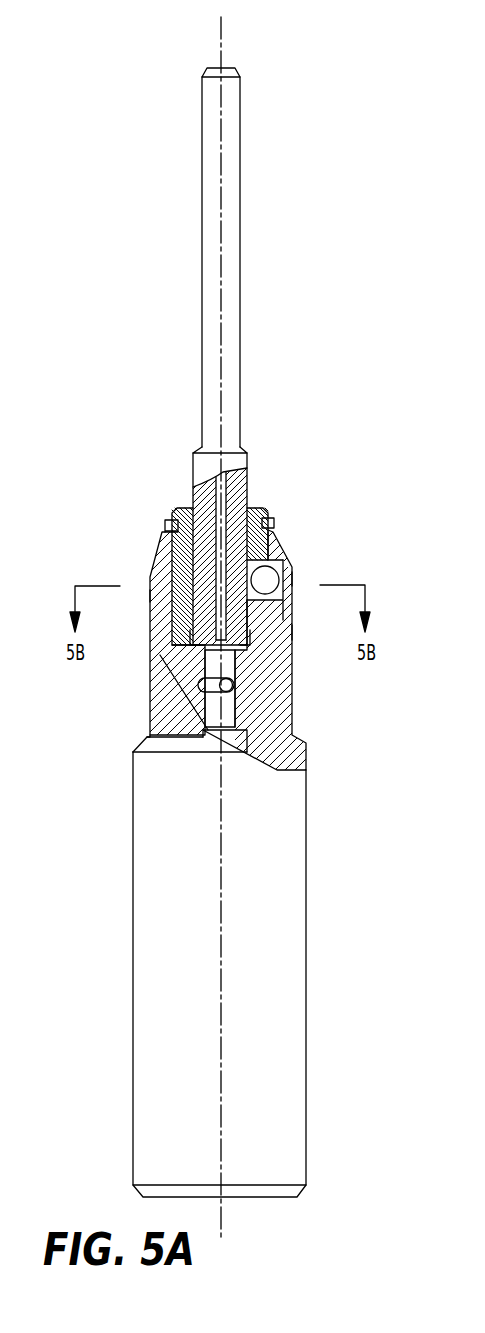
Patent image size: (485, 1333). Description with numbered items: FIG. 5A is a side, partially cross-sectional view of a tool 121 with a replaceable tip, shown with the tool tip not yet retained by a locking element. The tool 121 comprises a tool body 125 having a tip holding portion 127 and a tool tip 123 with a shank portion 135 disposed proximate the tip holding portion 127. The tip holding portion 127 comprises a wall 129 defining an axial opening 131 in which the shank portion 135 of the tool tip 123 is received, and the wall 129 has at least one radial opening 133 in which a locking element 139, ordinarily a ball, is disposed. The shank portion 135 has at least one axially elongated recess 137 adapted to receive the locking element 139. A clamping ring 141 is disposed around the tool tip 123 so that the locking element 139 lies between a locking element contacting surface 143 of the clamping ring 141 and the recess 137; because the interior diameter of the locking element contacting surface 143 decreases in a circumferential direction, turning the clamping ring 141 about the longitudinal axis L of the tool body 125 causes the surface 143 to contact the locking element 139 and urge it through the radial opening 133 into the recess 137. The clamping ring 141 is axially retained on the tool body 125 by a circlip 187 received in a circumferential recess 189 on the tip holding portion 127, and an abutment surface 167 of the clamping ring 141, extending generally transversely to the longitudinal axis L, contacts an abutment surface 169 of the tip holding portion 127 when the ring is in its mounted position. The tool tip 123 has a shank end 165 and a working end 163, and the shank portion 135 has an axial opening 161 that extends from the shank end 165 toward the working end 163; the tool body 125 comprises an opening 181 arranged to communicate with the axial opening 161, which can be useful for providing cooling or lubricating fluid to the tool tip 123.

The longitudinal axis L is at (221, 33).
The tool 121 is at (121, 682).
The tool tip 123 is at (240, 172).
The tool body 125 is at (307, 1010).
The tip holding portion 127 is at (295, 708).
The wall 129 is at (258, 512).
The axial opening 131 is at (202, 507).
The radial opening 133 is at (277, 573).
The shank portion 135 is at (248, 469).
The recess 137 is at (272, 546).
The locking element 139 is at (300, 592).
The clamping ring 141 is at (295, 579).
The locking element contacting surface 143 is at (293, 633).
The axial opening 161 is at (215, 641).
The working end 163 is at (241, 85).
The shank end 165 is at (167, 565).
The abutment surface 167 is at (172, 622).
The abutment surface 169 is at (151, 596).
The opening 181 is at (212, 710).
The circlip 187 is at (165, 525).
The circumferential recess 189 is at (270, 520).